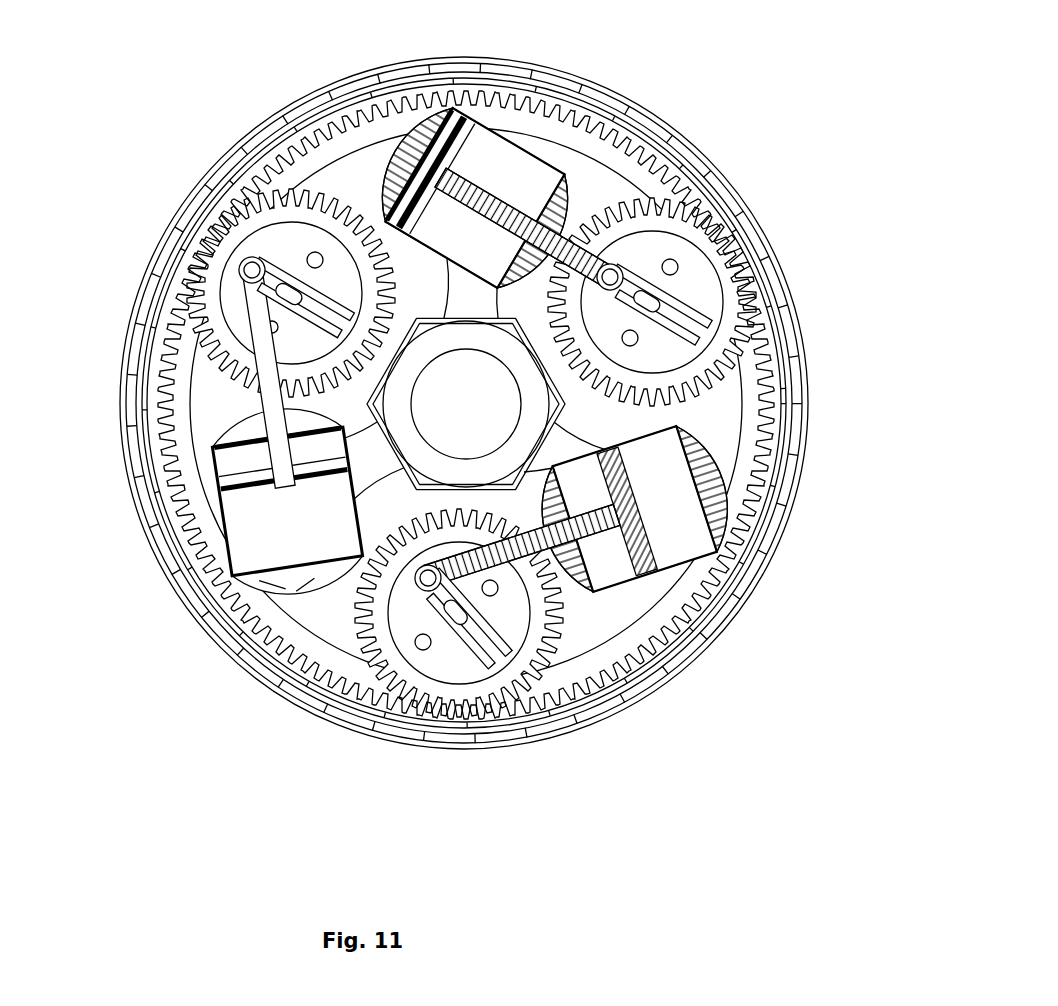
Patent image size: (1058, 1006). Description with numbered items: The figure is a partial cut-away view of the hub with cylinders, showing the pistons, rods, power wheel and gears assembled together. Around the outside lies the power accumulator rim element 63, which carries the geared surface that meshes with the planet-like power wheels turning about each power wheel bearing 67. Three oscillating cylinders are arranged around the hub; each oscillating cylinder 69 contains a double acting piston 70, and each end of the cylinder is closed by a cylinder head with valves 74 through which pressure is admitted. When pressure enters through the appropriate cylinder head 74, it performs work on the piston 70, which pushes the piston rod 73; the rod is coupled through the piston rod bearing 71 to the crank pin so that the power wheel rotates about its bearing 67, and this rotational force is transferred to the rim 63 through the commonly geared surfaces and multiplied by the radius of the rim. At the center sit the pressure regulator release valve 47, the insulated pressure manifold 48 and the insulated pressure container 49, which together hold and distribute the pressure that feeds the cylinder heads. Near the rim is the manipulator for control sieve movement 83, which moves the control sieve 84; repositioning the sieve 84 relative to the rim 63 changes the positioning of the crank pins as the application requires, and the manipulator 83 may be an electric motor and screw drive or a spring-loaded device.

The pressure regulator release valve 47 is at (486, 417).
The insulated pressure manifold 48 is at (375, 432).
The insulated pressure container 49 is at (563, 417).
The power accumulator rim element 63 is at (522, 66).
The power wheel bearing 67 is at (652, 297).
The oscillating cylinder 69 is at (512, 180).
The piston 70 is at (245, 481).
The piston rod bearing 71 is at (265, 411).
The piston rod 73 is at (265, 316).
The cylinder head with valves 74 is at (723, 482).
The manipulator for control sieve movement 83 is at (602, 93).
The control sieve 84 is at (632, 130).